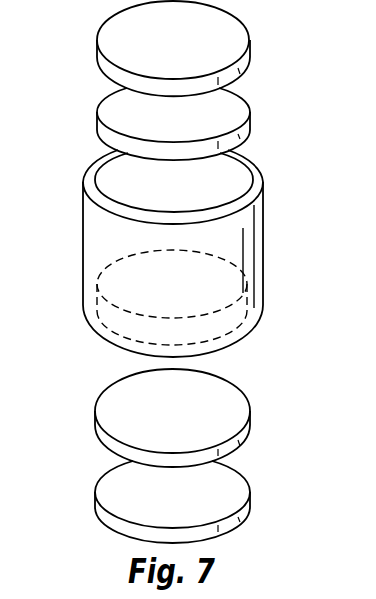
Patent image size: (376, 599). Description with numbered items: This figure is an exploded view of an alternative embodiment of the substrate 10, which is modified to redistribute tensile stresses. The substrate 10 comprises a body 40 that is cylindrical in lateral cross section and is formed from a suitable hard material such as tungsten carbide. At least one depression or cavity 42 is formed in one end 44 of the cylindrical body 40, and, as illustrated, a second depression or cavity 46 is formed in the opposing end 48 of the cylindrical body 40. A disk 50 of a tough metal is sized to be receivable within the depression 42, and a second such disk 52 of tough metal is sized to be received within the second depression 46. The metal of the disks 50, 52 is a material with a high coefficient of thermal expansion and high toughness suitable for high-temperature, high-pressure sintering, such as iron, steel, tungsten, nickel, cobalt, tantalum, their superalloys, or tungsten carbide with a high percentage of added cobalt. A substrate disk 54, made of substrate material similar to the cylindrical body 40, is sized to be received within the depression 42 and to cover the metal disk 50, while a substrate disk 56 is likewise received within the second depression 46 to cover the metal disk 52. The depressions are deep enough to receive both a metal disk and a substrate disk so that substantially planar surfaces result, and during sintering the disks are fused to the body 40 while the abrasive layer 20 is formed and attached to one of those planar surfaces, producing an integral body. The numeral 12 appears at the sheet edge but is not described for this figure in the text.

The substrate 10 is at (288, 230).
The body 40 is at (189, 228).
The depression 42 is at (213, 180).
The end 44 is at (90, 168).
The second depression 46 is at (200, 283).
The opposing end 48 is at (256, 331).
The disk 50 is at (223, 107).
The second disk 52 is at (210, 403).
The substrate disk 54 is at (215, 43).
The substrate disk 56 is at (222, 487).
The component 12 is at (265, 590).
The abrasive layer 20 is at (358, 590).